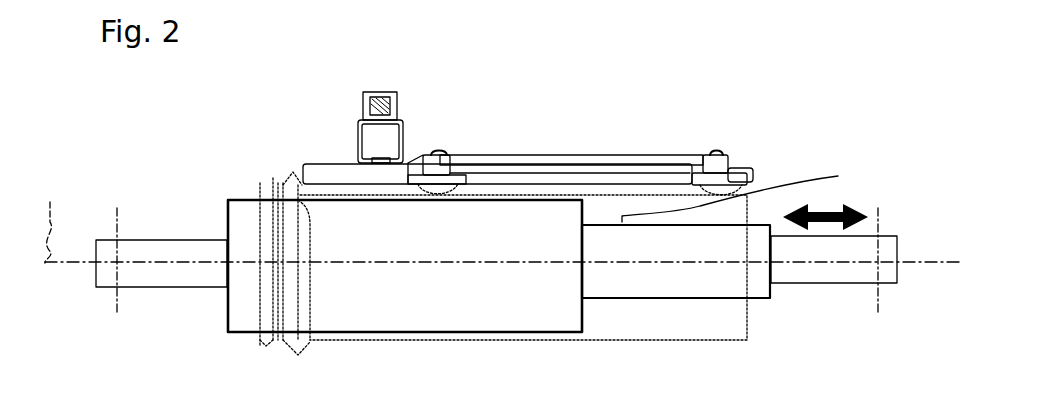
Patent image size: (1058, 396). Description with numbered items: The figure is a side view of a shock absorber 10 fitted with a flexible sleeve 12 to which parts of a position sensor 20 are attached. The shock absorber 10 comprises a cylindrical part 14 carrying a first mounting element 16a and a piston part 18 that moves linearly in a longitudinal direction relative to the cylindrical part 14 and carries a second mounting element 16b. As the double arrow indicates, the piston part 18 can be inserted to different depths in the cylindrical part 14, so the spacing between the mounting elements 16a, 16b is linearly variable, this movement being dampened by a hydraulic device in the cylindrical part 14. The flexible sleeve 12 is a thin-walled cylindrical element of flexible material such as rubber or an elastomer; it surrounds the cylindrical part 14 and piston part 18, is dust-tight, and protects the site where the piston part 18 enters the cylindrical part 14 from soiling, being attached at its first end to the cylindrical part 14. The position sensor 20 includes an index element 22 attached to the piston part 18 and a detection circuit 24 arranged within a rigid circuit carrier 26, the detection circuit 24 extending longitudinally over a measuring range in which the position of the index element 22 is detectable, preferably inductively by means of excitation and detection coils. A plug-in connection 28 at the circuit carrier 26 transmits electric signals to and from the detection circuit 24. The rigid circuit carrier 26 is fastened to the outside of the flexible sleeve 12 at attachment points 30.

The shock absorber 10 is at (581, 98).
The flexible sleeve 12 is at (630, 340).
The cylindrical part 14 is at (247, 325).
The first mounting element 16a is at (97, 289).
The second mounting element 16b is at (881, 286).
The piston part 18 is at (764, 299).
The position sensor 20 is at (545, 144).
The index element 22 is at (745, 188).
The detection circuit 24 is at (627, 168).
The rigid circuit carrier 26 is at (593, 138).
The plug-in connection 28 is at (377, 103).
The attachment points 30 is at (418, 160).